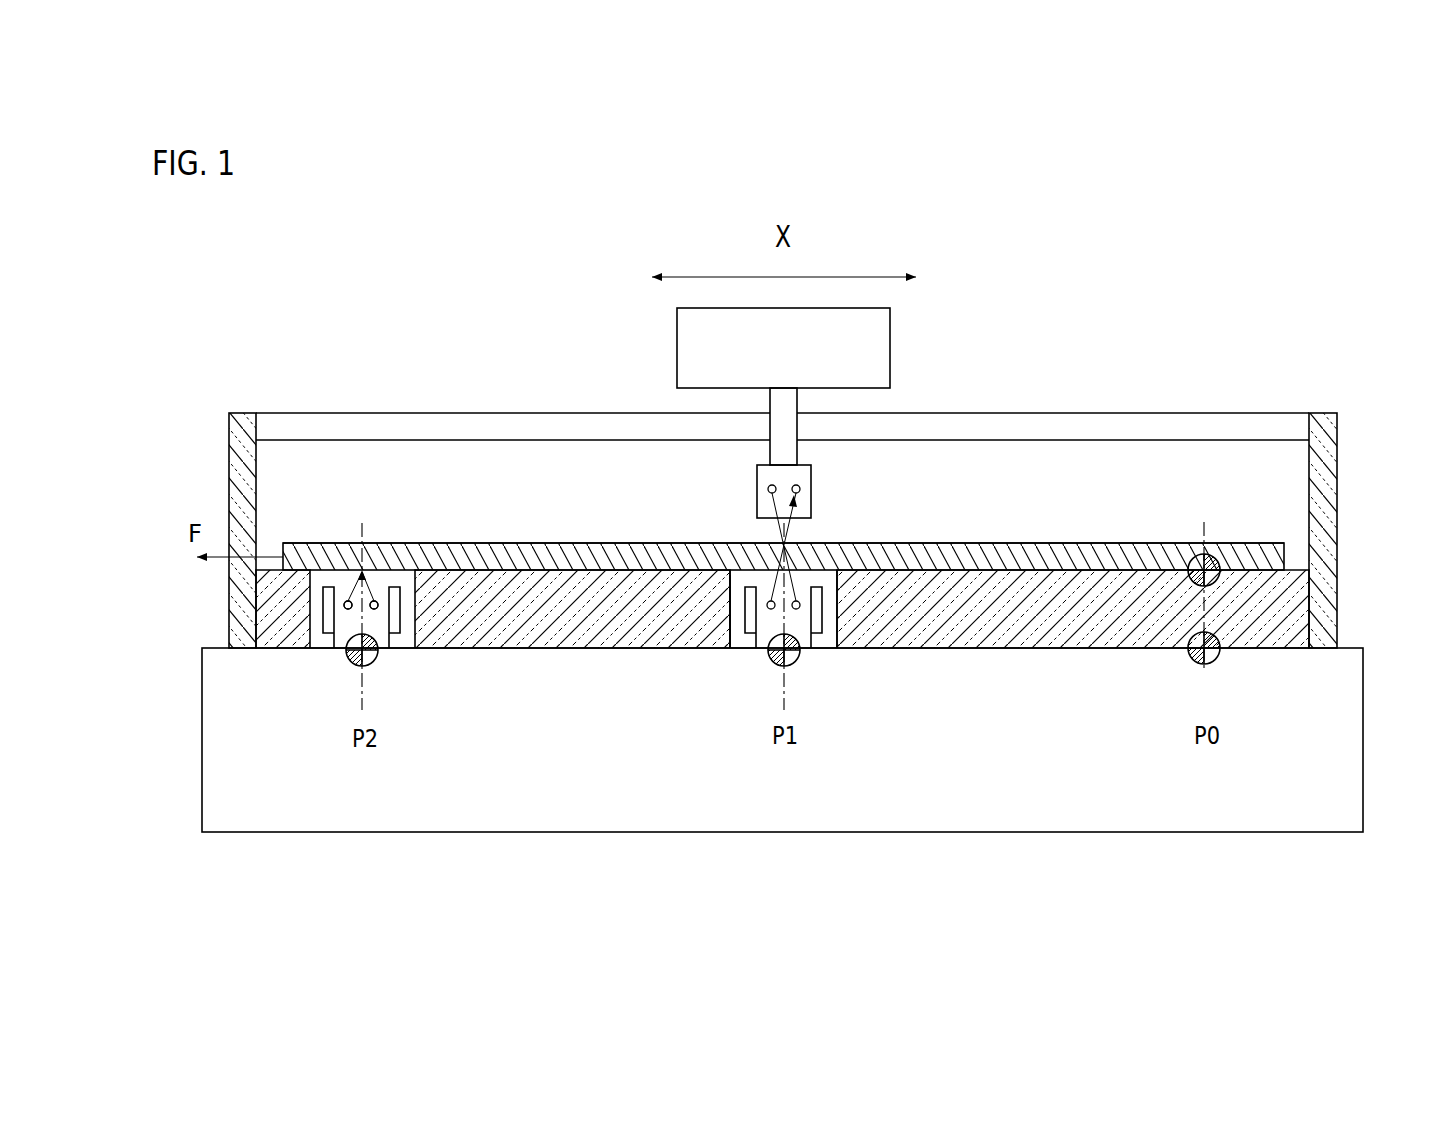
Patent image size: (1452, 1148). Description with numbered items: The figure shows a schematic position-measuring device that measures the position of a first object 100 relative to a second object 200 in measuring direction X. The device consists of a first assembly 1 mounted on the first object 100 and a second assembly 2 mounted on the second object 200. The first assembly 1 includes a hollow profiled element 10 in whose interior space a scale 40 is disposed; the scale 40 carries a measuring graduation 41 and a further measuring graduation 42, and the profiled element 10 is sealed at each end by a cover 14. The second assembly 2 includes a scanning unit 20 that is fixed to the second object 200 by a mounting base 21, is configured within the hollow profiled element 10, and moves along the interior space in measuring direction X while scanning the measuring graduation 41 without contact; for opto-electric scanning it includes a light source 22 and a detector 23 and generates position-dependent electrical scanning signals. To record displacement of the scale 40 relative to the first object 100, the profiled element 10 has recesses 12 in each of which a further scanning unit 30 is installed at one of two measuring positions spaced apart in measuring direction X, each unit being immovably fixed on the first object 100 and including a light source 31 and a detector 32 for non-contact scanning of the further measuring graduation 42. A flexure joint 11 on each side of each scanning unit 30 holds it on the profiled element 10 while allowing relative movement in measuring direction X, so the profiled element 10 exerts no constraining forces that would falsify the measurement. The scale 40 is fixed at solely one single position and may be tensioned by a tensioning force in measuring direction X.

The first assembly 1 is at (1283, 365).
The second assembly 2 is at (849, 395).
The profiled element 10 is at (1298, 618).
The flexure joint 11 is at (328, 615).
The recess 12 is at (838, 575).
The cover 14 is at (240, 425).
The scanning unit 20 is at (803, 473).
The mounting base 21 is at (782, 400).
The light source 22 is at (768, 489).
The detector 23 is at (800, 489).
The further scanning unit 30 is at (385, 590).
The light source 31 is at (348, 600).
The detector 32 is at (372, 598).
The scale 40 is at (1288, 552).
The measuring graduation 41 is at (1115, 545).
The further measuring graduation 42 is at (740, 580).
The first object 100 is at (1345, 790).
The second object 200 is at (870, 340).